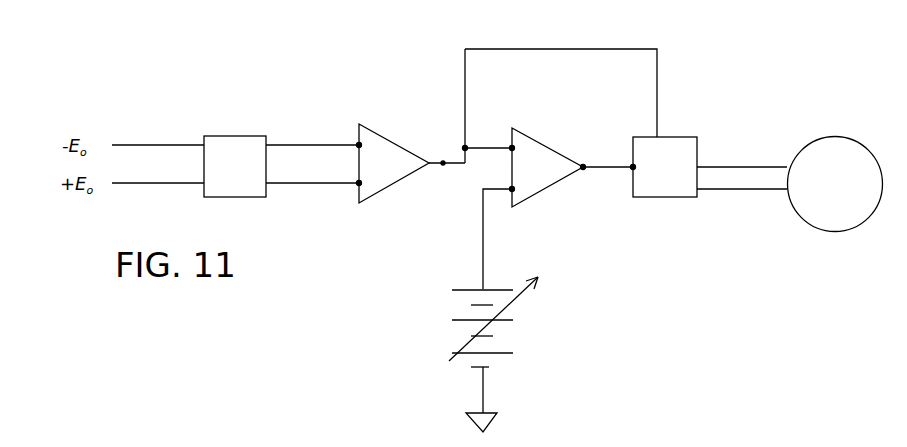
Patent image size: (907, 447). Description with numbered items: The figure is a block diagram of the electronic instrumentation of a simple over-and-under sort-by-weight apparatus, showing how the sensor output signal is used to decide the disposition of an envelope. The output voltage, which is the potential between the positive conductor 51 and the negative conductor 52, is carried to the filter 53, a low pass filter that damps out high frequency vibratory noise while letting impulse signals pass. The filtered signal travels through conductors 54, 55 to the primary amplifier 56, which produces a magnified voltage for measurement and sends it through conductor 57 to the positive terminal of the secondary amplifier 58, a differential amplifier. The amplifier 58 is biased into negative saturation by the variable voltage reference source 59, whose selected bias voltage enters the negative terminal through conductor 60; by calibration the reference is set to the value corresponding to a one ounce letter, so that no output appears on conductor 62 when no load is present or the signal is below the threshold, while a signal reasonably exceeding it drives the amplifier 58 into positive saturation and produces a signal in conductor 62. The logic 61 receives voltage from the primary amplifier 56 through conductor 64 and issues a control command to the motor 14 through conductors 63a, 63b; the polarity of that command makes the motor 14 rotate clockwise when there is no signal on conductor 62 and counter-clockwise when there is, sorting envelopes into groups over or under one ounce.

The motor 14 is at (843, 222).
The conductor 51 is at (140, 184).
The conductor 52 is at (186, 122).
The filter 53 is at (242, 181).
The conductor 54 is at (292, 145).
The conductor 55 is at (300, 184).
The primary amplifier 56 is at (394, 178).
The conductor 57 is at (443, 163).
The secondary amplifier 58 is at (524, 167).
The variable voltage reference source 59 is at (467, 353).
The conductor 60 is at (483, 232).
The logic 61 is at (675, 181).
The conductor 62 is at (605, 167).
The conductor 63a is at (727, 167).
The conductor 63b is at (732, 190).
The conductor 64 is at (580, 22).